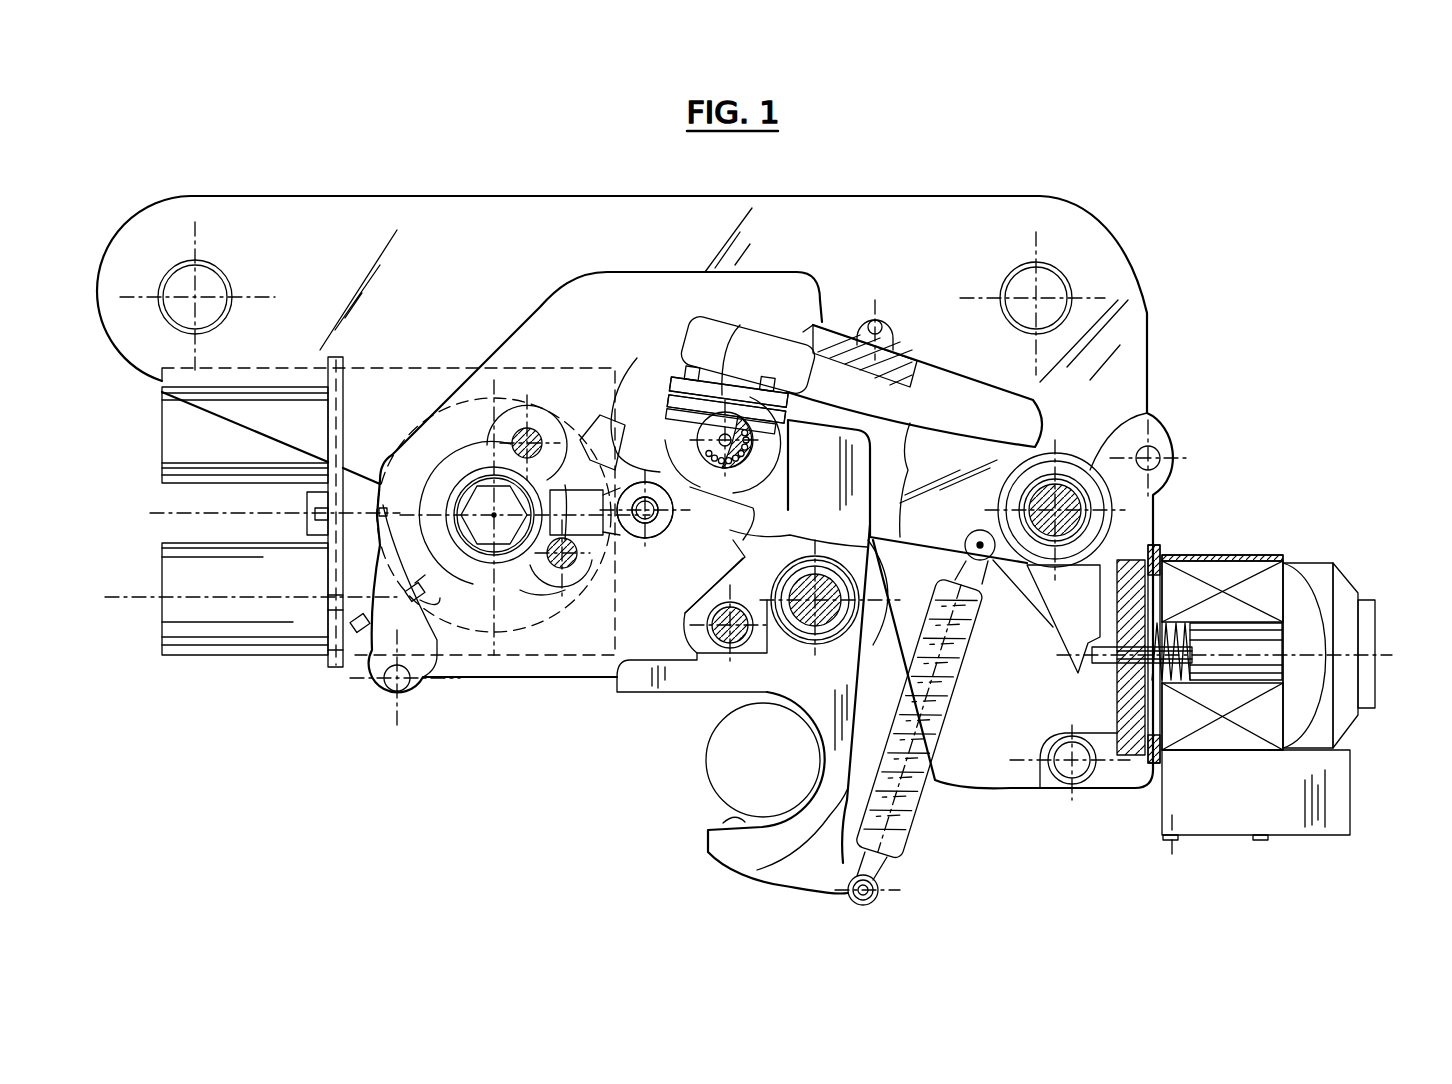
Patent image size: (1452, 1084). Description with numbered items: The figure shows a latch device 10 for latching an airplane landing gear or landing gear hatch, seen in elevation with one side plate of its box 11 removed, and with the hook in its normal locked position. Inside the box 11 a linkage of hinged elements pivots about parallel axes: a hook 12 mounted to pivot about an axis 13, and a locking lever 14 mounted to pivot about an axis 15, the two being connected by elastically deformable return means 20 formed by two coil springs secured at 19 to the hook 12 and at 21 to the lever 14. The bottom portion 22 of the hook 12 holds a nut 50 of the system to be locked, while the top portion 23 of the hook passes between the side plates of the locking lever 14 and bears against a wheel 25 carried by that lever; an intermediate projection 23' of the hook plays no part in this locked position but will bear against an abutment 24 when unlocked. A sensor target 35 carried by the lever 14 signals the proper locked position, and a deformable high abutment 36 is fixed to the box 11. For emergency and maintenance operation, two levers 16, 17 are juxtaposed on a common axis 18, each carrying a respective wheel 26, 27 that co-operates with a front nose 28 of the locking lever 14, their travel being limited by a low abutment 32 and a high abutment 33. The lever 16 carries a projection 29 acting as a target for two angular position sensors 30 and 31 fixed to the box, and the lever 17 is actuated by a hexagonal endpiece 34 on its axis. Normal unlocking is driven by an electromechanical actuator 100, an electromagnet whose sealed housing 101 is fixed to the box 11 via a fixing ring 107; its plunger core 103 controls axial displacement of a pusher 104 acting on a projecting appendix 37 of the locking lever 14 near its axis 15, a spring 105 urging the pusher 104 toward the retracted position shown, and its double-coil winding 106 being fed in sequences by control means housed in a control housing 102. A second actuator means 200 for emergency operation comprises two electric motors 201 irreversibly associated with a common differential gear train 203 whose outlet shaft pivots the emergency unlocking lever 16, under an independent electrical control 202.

The latch device 10 is at (1172, 206).
The box 11 is at (963, 217).
The hook 12 is at (798, 868).
The axis 13 is at (808, 642).
The locking lever 14 is at (945, 452).
The axis 15 is at (1160, 414).
The lever 16 is at (632, 538).
The lever 17 is at (632, 538).
The common axis 18 is at (490, 510).
The spring attachment point 19 is at (872, 900).
The elastically deformable return means 20 is at (955, 690).
The spring attachment point 21 is at (988, 562).
The bottom portion 22 is at (707, 823).
The top portion 23 is at (914, 386).
The intermediate projection 23' is at (719, 550).
The abutment 24 is at (712, 630).
The wheel 25 is at (755, 465).
The wheel 26 is at (665, 400).
The wheel 27 is at (665, 400).
The front nose 28 is at (603, 460).
The projection 29 is at (445, 507).
The angular position sensor 30 is at (388, 520).
The angular position sensor 31 is at (437, 594).
The low abutment 32 is at (568, 572).
The high abutment 33 is at (517, 427).
The hexagonal endpiece 34 is at (540, 572).
The sensor target 35 is at (735, 365).
The high abutment 36 is at (917, 353).
The projecting appendix 37 is at (1070, 613).
The nut 50 is at (700, 757).
The electromechanical actuator 100 is at (1285, 538).
The sealed housing 101 is at (1205, 553).
The control housing 102 is at (1328, 795).
The plunger core 103 is at (1268, 648).
The pusher 104 is at (1110, 655).
The spring 105 is at (1167, 687).
The winding 106 is at (1267, 595).
The fixing ring 107 is at (1157, 545).
The second actuator means 200 is at (272, 665).
The electric motors 201 is at (178, 436).
The independent electrical control 202 is at (307, 505).
The differential gear train 203 is at (527, 650).